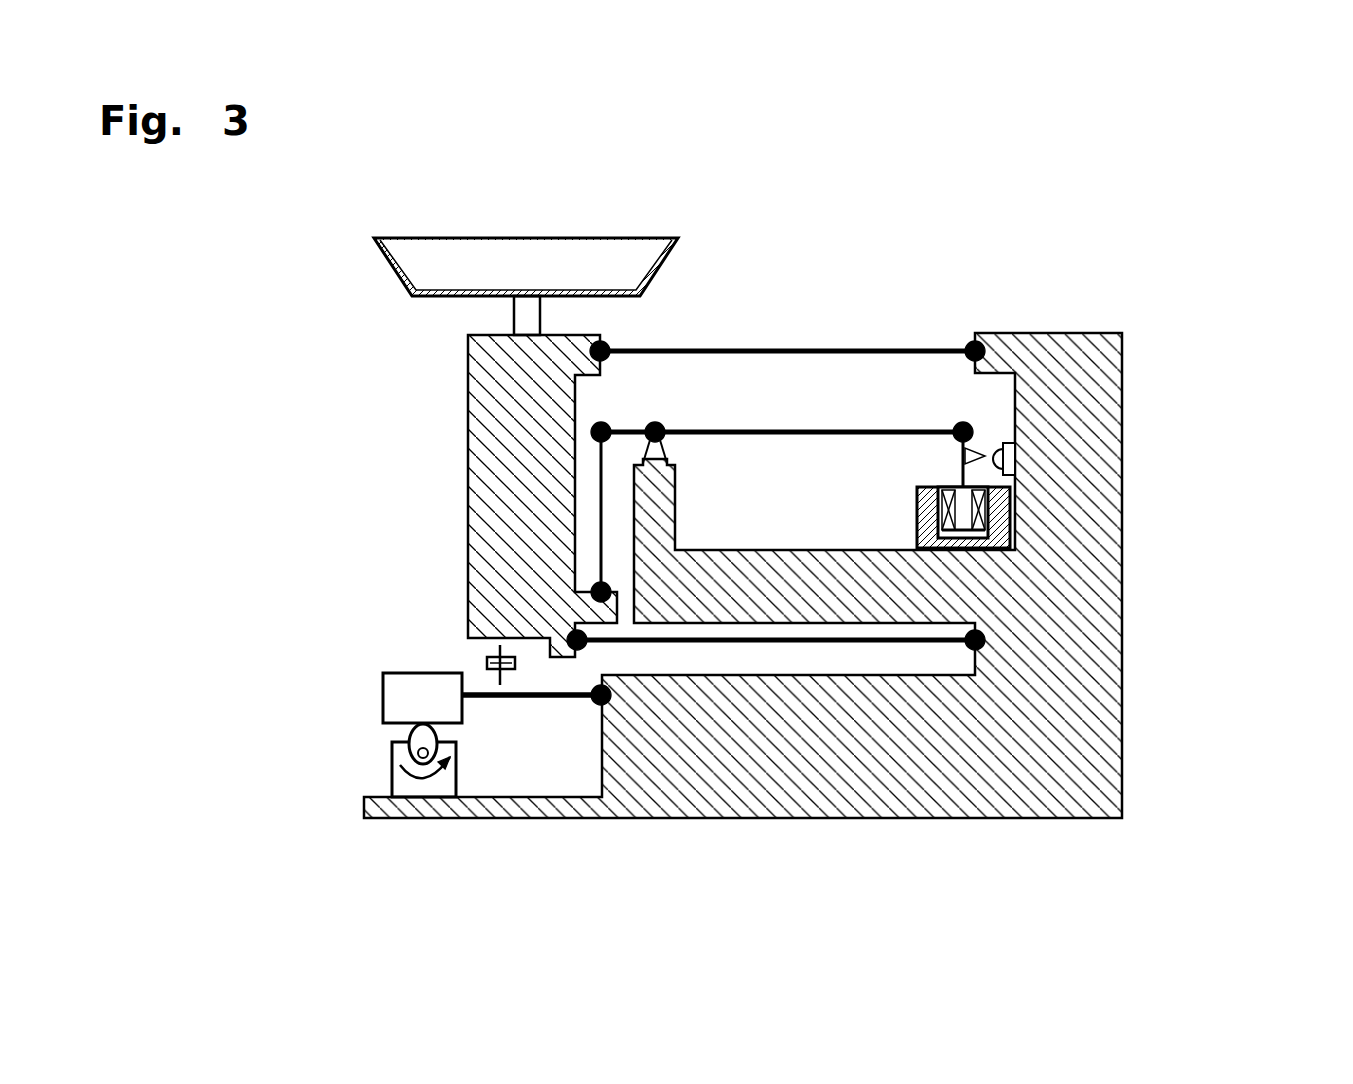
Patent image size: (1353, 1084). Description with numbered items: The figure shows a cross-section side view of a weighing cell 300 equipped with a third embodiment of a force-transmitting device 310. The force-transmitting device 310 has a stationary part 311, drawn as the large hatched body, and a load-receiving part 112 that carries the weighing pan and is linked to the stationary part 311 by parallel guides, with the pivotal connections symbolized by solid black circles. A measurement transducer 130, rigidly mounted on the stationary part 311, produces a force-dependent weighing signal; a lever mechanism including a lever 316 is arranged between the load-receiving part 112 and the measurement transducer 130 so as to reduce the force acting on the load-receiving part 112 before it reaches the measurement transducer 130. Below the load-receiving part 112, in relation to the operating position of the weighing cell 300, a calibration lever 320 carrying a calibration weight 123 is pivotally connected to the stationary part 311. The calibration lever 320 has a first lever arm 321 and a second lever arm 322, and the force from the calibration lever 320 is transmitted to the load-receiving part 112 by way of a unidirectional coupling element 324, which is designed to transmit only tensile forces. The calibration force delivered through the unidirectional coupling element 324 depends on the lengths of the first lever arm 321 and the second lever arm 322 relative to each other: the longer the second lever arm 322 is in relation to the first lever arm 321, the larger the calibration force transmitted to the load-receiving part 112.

The weighing cell 300 is at (1162, 328).
The force-transmitting device 310 is at (847, 389).
The stationary part 311 is at (1075, 729).
The lever 316 is at (750, 432).
The load-receiving part 112 is at (527, 502).
The measurement transducer 130 is at (1038, 508).
The calibration lever 320 is at (516, 728).
The first lever arm 321 is at (483, 698).
The second lever arm 322 is at (555, 698).
The unidirectional coupling element 324 is at (488, 663).
The calibration weight 123 is at (403, 703).